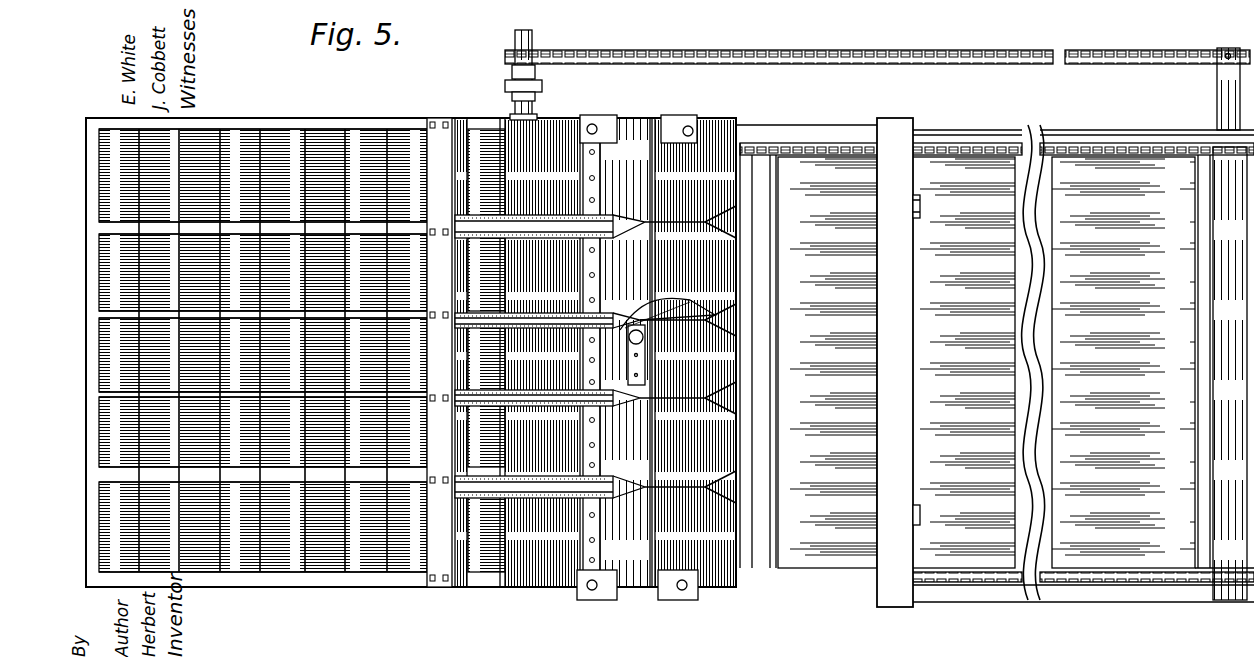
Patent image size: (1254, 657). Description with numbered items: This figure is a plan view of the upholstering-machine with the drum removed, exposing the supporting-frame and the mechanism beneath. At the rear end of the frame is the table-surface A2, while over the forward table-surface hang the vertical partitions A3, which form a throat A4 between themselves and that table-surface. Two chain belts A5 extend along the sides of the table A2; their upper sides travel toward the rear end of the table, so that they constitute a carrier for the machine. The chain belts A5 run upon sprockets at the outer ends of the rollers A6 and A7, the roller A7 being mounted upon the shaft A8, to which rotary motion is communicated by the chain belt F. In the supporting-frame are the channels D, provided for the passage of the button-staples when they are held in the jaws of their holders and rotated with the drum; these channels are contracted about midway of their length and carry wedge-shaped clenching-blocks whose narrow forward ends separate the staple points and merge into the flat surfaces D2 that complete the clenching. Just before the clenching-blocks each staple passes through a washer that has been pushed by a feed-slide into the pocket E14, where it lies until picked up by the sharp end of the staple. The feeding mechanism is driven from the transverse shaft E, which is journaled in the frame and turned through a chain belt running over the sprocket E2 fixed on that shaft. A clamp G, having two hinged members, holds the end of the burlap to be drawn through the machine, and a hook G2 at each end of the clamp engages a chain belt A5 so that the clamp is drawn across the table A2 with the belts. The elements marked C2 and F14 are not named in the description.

The table-surface A2 is at (1053, 362).
The vertical partitions A3 is at (333, 240).
The throat A4 is at (263, 350).
The chain belts A5 is at (1110, 583).
The roller A6 is at (770, 214).
The roller A7 is at (1210, 202).
The shaft A8 is at (1226, 94).
The bracket C2 is at (926, 190).
The channels D is at (655, 487).
The flat surfaces D2 is at (735, 353).
The shaft E is at (530, 110).
The sprocket E2 is at (541, 87).
The pocket E14 is at (646, 372).
The chain belt F is at (1018, 64).
The guide F14 is at (650, 305).
The clamp G is at (912, 374).
The hook G2 is at (915, 574).